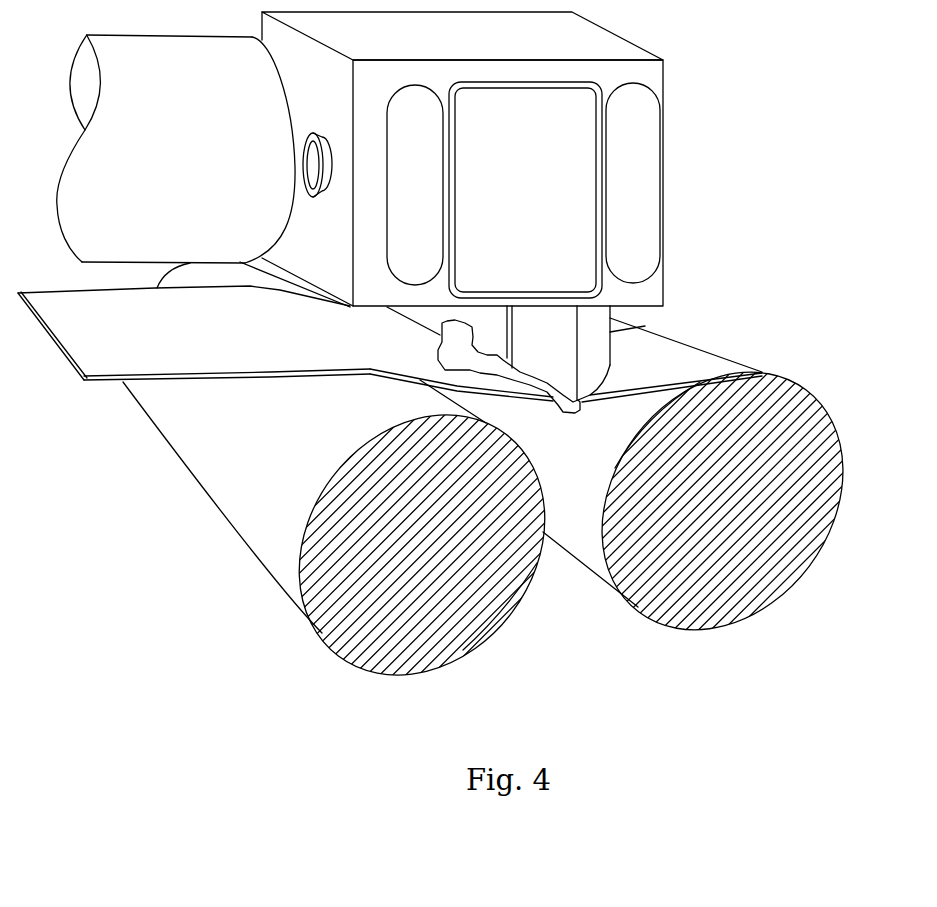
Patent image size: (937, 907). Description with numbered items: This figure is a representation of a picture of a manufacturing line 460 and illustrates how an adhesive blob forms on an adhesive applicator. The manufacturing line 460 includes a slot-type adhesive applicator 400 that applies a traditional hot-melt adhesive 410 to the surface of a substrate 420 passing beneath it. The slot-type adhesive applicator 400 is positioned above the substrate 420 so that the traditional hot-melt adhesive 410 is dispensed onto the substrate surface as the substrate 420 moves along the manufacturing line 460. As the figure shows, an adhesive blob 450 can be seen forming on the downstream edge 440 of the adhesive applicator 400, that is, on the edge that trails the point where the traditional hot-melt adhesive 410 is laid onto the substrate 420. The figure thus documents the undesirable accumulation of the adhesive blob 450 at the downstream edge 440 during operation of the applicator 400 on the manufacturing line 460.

The slot-type adhesive applicator 400 is at (690, 197).
The traditional hot-melt adhesive 410 is at (525, 389).
The substrate 420 is at (172, 337).
The downstream edge 440 is at (462, 382).
The adhesive blob 450 is at (430, 343).
The manufacturing line 460 is at (589, 609).